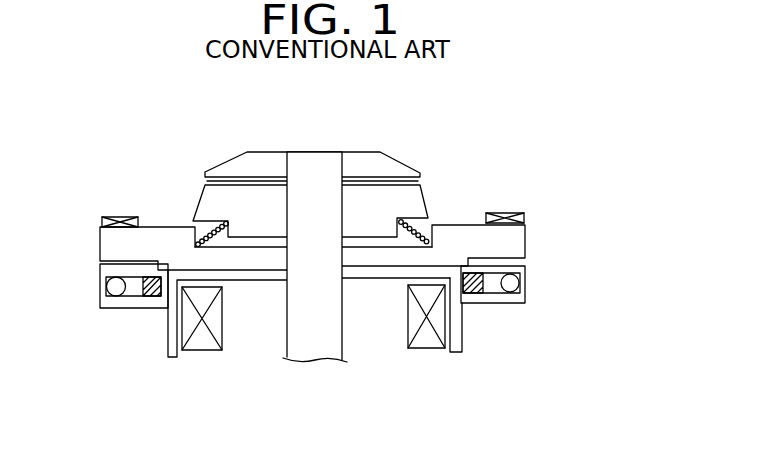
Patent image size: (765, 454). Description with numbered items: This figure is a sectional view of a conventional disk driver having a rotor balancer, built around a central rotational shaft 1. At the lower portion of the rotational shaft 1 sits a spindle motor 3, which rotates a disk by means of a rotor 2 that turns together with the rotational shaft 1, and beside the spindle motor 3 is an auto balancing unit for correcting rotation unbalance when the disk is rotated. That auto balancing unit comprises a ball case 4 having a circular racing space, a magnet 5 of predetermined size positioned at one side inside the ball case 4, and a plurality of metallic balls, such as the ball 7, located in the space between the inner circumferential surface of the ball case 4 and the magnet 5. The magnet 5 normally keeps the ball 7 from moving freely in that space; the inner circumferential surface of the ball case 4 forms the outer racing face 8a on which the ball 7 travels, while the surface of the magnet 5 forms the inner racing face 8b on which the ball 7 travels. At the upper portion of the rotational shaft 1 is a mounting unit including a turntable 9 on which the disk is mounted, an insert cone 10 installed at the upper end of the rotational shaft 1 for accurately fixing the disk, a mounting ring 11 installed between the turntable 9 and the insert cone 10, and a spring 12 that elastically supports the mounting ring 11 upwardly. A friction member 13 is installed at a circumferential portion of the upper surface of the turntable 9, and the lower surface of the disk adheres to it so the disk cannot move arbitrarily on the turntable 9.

The rotational shaft 1 is at (312, 352).
The rotor 2 is at (202, 342).
The spindle motor 3 is at (170, 357).
The ball case 4 is at (525, 283).
The magnet 5 is at (153, 293).
The ball 7 is at (110, 291).
The outer racing face 8a is at (518, 298).
The inner racing face 8b is at (485, 297).
The turntable 9 is at (105, 248).
The insert cone 10 is at (225, 168).
The mounting ring 11 is at (205, 207).
The spring 12 is at (407, 222).
The friction member 13 is at (112, 217).